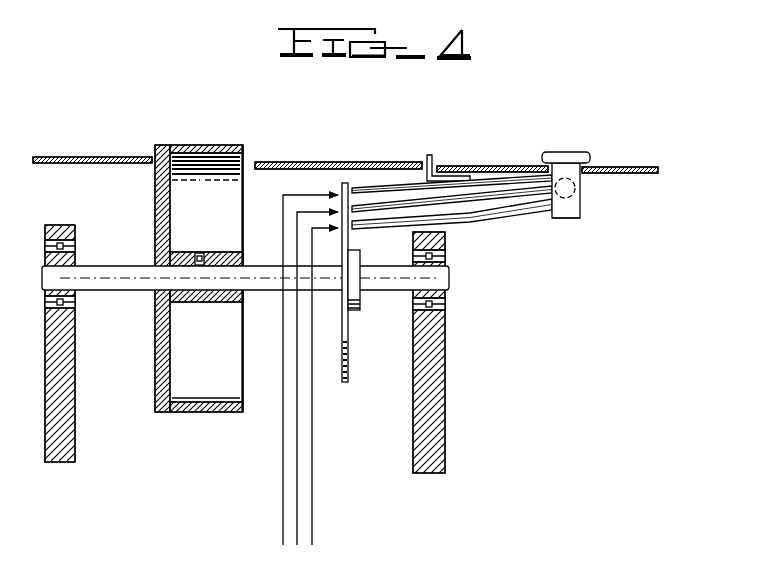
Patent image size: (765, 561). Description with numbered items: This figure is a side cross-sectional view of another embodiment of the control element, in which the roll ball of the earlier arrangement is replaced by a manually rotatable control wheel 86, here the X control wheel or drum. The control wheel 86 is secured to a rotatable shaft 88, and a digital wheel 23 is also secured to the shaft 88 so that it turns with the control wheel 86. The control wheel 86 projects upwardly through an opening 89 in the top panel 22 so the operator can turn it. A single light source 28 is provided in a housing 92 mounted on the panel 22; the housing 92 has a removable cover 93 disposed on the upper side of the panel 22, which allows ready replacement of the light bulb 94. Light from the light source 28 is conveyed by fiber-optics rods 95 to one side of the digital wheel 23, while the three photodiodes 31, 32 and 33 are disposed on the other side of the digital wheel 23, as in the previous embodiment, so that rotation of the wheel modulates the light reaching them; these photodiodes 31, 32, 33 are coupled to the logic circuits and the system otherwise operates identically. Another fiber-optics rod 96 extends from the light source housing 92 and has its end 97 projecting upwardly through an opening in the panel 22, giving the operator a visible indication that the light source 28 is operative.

The top panel 22 is at (311, 160).
The digital wheel 23 is at (352, 333).
The light source 28 is at (597, 205).
The photodiode 31 is at (302, 211).
The photodiode 32 is at (322, 192).
The photodiode 33 is at (315, 227).
The control wheel 86 is at (186, 144).
The rotatable shaft 88 is at (113, 280).
The opening 89 is at (245, 160).
The housing 92 is at (565, 222).
The removable cover 93 is at (565, 151).
The light bulb 94 is at (576, 188).
The fiber-optics rods 95 is at (473, 220).
The fiber-optics rod 96 is at (469, 185).
The end 97 is at (429, 154).